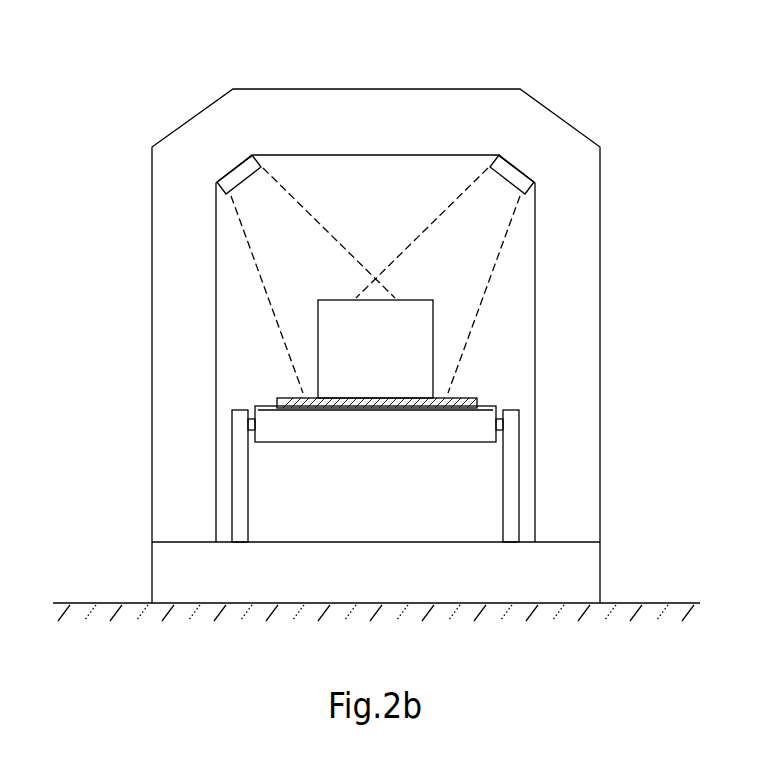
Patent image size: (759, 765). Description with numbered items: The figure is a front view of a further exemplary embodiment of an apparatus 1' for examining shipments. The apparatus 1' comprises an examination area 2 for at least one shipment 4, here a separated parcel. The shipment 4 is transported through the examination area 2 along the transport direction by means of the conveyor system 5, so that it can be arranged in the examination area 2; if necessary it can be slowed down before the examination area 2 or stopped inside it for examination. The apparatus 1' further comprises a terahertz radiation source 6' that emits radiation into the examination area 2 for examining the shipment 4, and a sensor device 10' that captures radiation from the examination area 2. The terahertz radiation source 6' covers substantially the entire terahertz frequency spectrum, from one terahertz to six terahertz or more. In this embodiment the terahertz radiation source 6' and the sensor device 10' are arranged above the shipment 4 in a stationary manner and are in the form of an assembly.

The apparatus 1' is at (432, 346).
The examination area 2 is at (372, 185).
The shipment 4 is at (365, 363).
The conveyor system 5 is at (378, 412).
The terahertz radiation source 6' is at (376, 116).
The sensor device 10' is at (375, 308).